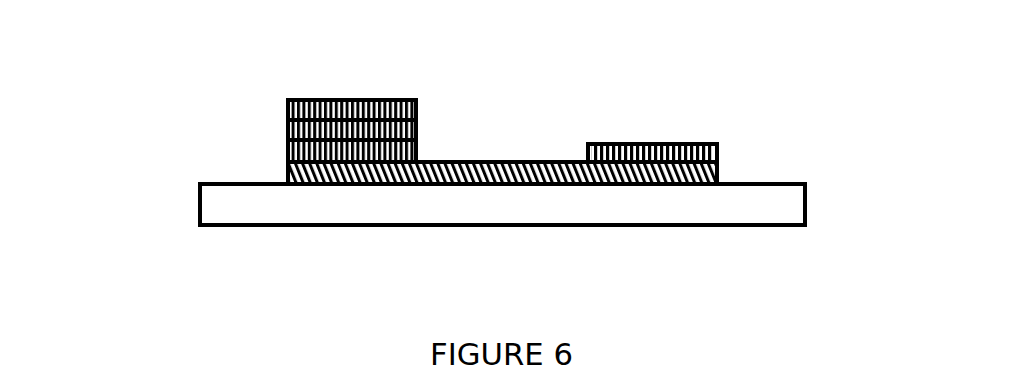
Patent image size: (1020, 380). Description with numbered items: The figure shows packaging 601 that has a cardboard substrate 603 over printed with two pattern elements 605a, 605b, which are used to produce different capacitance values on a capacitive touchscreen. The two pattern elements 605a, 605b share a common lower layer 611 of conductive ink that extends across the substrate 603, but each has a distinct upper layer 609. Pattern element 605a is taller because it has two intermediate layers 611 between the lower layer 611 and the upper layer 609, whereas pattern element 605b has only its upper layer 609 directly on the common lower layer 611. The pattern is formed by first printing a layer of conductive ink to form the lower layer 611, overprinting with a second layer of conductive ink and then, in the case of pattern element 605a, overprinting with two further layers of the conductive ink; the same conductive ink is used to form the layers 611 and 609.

The packaging 601 is at (238, 117).
The cardboard substrate 603 is at (265, 205).
The pattern element 605a is at (377, 101).
The pattern element 605b is at (658, 141).
The upper layer 609 is at (722, 148).
The lower layer 611 is at (287, 152).